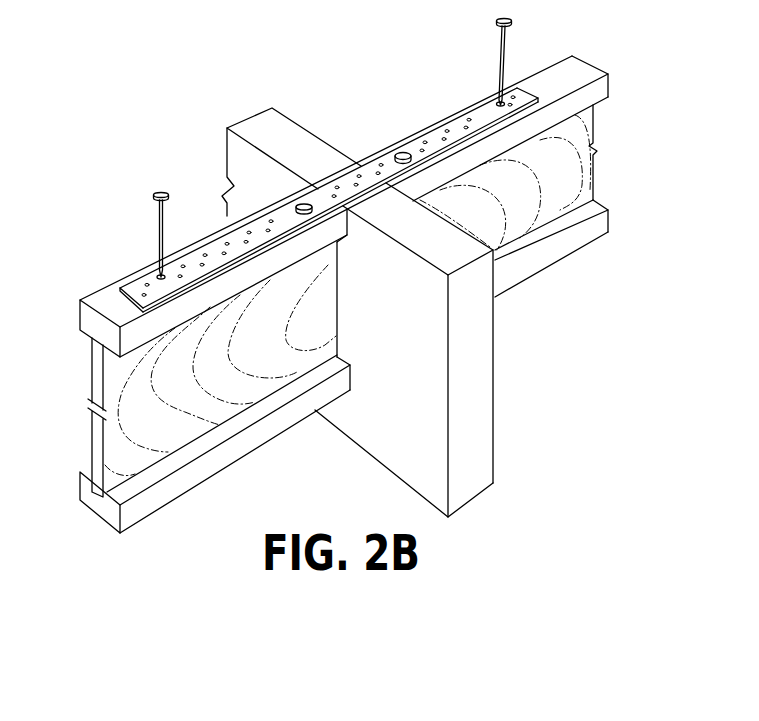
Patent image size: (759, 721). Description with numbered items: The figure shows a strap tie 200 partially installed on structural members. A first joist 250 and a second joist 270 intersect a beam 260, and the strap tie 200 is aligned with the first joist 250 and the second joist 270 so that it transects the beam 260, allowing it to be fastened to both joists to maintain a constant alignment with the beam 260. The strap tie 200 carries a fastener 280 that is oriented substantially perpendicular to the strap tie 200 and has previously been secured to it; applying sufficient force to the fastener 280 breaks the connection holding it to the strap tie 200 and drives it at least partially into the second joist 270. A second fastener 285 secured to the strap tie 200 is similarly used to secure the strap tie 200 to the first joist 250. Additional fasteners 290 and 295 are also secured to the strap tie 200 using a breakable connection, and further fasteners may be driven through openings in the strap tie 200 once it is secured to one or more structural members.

The strap tie 200 is at (245, 218).
The first joist 250 is at (552, 254).
The beam 260 is at (479, 385).
The second joist 270 is at (150, 405).
The fastener 280 is at (157, 255).
The second fastener 285 is at (503, 62).
The fastener 290 is at (226, 160).
The fastener 295 is at (397, 148).